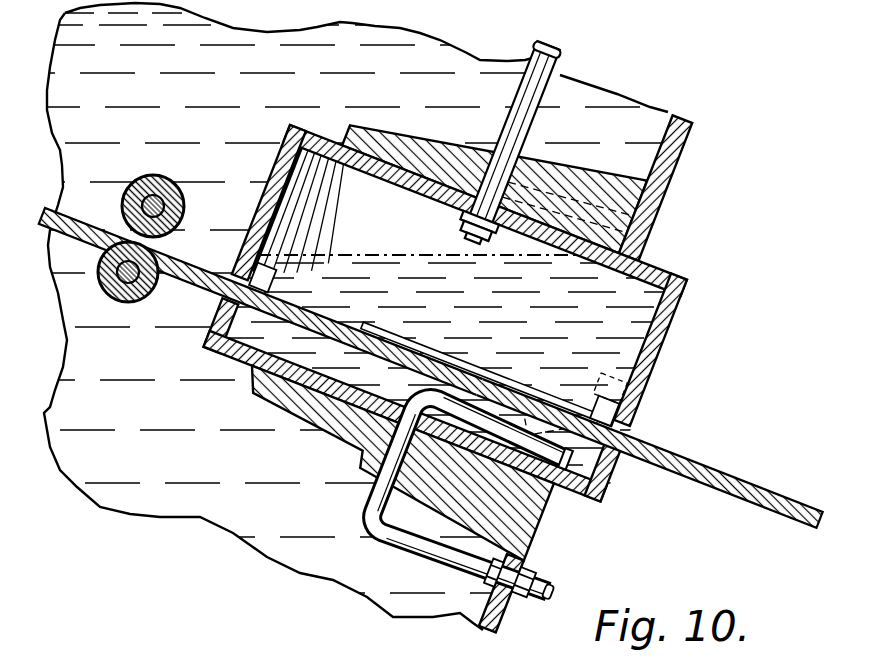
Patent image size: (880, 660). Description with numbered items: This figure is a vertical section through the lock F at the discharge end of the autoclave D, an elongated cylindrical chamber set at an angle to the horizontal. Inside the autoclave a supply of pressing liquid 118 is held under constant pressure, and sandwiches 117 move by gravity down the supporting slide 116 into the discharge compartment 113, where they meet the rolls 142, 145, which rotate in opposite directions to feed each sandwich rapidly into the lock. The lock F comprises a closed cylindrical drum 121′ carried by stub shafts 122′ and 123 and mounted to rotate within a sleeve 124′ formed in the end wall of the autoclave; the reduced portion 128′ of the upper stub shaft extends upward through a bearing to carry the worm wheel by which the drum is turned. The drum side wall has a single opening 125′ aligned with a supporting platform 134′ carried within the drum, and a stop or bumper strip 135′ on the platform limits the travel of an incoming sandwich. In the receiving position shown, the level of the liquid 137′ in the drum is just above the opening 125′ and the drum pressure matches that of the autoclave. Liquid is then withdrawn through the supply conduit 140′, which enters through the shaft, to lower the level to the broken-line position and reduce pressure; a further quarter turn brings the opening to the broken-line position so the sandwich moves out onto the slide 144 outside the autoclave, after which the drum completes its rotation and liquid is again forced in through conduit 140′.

The compartment 113 is at (88, 464).
The supporting slide 116 is at (96, 226).
The sandwiches 117 is at (475, 365).
The pressing liquid 118 is at (607, 102).
The drum 121′ is at (668, 322).
The stub shaft 122′ is at (528, 168).
The stub shaft 123 is at (350, 456).
The sleeve 124′ is at (651, 206).
The opening or slot 125′ is at (262, 272).
The reduced portion 128′ is at (505, 126).
The supporting platform 134′ is at (380, 358).
The stop or bumper strip 135′ is at (599, 386).
The liquid 137′ is at (384, 226).
The supply conduit 140′ is at (530, 580).
The roll 142 is at (158, 174).
The slide 144 is at (760, 488).
The roller 145 is at (97, 268).
The autoclave D is at (695, 139).
The lock F is at (688, 298).